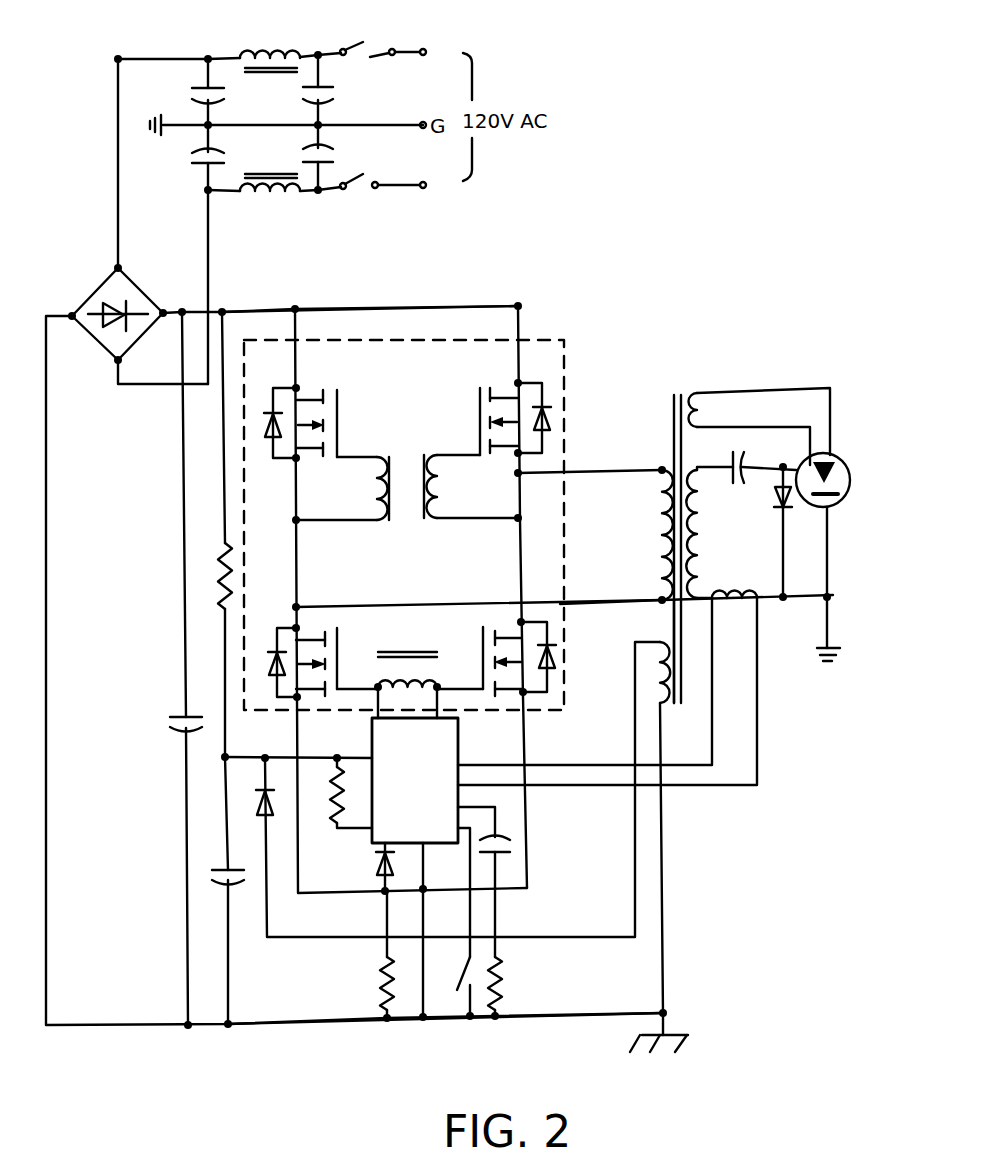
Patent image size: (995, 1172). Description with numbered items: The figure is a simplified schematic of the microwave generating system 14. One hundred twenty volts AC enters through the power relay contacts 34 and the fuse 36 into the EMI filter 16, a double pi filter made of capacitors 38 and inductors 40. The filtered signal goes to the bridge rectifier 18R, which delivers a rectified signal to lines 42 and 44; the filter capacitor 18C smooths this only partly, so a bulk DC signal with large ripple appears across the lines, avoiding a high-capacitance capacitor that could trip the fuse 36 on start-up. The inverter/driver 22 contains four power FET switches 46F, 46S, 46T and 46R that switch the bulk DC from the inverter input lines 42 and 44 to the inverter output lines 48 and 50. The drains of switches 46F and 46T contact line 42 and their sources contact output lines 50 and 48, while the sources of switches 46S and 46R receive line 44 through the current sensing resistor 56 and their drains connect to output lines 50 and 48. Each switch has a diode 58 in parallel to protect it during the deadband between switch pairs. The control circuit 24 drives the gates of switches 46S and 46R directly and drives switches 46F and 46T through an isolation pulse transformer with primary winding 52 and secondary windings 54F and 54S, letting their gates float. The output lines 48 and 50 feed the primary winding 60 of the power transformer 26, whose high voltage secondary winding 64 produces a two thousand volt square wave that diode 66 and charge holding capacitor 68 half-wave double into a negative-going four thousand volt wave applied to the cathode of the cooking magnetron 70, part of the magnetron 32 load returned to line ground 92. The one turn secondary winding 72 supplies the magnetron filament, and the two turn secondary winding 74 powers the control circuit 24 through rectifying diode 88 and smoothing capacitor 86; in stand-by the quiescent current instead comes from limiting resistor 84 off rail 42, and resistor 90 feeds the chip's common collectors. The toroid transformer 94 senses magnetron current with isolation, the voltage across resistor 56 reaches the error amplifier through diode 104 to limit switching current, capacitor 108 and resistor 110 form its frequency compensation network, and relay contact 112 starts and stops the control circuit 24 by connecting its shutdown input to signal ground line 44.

The microwave generating system 14 is at (447, 262).
The EMI filter 16 is at (305, 197).
The bridge rectifier 18R is at (102, 350).
The filter capacitor 18C is at (177, 713).
The inverter/driver 22 is at (422, 340).
The control circuit 24 is at (446, 777).
The power transformer 26 is at (695, 635).
The magnetron 32 is at (845, 435).
The power relay contacts 34 is at (363, 175).
The fuse 36 is at (363, 42).
The capacitors 38 is at (320, 150).
The inductors 40 is at (278, 47).
The inverter input line 42 is at (358, 308).
The inverter input line 44 is at (350, 1026).
The first transistor 46F is at (337, 413).
The third transistor 46T is at (480, 408).
The second transistor 46S is at (337, 663).
The fourth transistor 46R is at (482, 658).
The inverter output line 48 is at (577, 470).
The inverter output line 50 is at (633, 602).
The primary winding 52 is at (397, 652).
The secondary winding 54F is at (400, 520).
The secondary winding 54S is at (417, 520).
The resistor 56 is at (382, 980).
The diode 58 is at (273, 438).
The primary winding 60 is at (660, 503).
The high voltage secondary winding 64 is at (698, 478).
The diode 66 is at (773, 510).
The charge holding capacitor 68 is at (737, 485).
The cooking magnetron 70 is at (847, 467).
The low voltage secondary winding 72 is at (698, 393).
The secondary winding 74 is at (667, 704).
The limiting resistor 84 is at (223, 607).
The smoothing capacitor 86 is at (228, 882).
The diode 88 is at (262, 817).
The current limiting resistor 90 is at (335, 827).
The line ground 92 is at (833, 595).
The toroid transformer 94 is at (760, 598).
The diode 104 is at (372, 868).
The capacitor 108 is at (497, 834).
The resistor 110 is at (503, 977).
The relay contact 112 is at (457, 978).